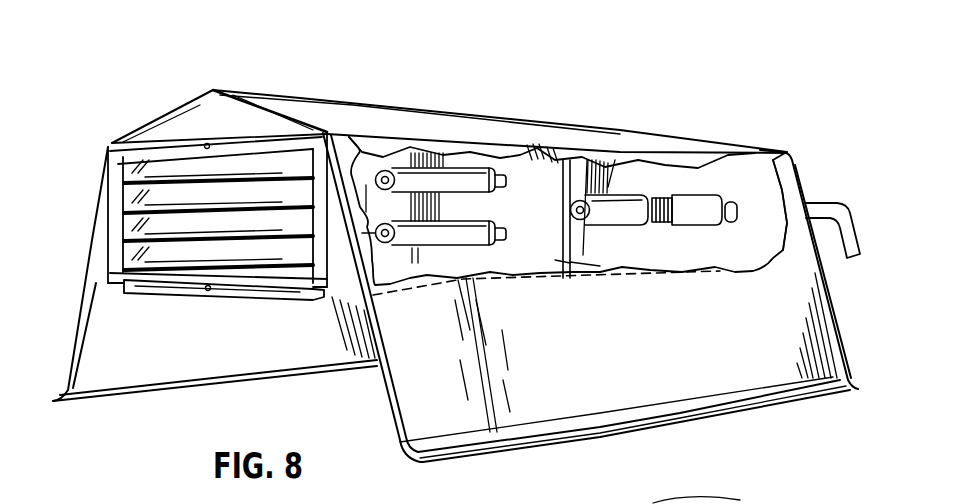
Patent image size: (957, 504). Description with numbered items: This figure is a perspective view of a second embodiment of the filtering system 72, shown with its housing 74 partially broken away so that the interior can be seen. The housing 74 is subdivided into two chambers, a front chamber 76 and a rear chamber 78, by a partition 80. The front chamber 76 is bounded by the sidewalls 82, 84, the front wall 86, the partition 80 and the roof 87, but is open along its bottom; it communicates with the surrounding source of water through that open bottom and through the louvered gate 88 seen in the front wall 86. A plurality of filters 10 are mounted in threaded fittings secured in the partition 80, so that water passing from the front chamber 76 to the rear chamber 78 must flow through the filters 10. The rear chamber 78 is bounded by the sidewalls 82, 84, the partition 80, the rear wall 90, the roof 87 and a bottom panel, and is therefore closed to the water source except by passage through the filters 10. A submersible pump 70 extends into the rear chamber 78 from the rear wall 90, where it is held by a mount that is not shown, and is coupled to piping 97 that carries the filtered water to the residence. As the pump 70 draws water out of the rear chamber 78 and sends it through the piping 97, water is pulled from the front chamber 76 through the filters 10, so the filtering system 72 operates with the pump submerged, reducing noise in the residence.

The filtering system 72 is at (668, 100).
The housing 74 is at (182, 91).
The roof 87 is at (287, 103).
The front wall 86 is at (97, 263).
The louvered gate 88 is at (284, 257).
The sidewall 82 is at (355, 162).
The filters 10 is at (426, 228).
The front chamber 76 is at (531, 185).
The rear chamber 78 is at (614, 176).
The submersible pump 70 is at (708, 208).
The rear wall 90 is at (755, 227).
The piping 97 is at (823, 203).
The partition 80 is at (540, 248).
The sidewall 84 is at (406, 392).